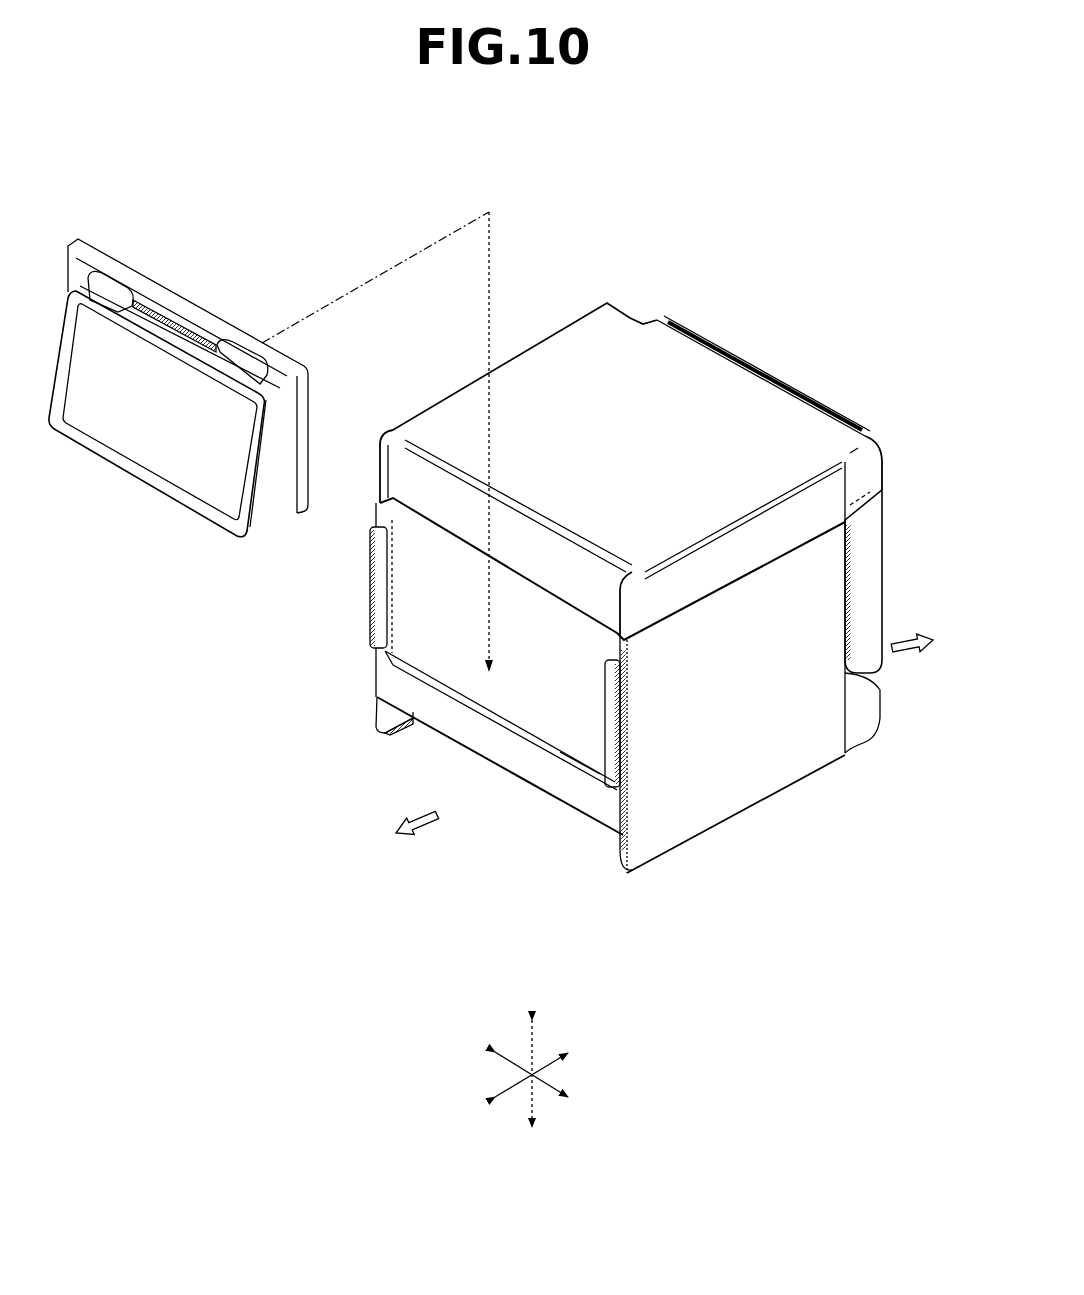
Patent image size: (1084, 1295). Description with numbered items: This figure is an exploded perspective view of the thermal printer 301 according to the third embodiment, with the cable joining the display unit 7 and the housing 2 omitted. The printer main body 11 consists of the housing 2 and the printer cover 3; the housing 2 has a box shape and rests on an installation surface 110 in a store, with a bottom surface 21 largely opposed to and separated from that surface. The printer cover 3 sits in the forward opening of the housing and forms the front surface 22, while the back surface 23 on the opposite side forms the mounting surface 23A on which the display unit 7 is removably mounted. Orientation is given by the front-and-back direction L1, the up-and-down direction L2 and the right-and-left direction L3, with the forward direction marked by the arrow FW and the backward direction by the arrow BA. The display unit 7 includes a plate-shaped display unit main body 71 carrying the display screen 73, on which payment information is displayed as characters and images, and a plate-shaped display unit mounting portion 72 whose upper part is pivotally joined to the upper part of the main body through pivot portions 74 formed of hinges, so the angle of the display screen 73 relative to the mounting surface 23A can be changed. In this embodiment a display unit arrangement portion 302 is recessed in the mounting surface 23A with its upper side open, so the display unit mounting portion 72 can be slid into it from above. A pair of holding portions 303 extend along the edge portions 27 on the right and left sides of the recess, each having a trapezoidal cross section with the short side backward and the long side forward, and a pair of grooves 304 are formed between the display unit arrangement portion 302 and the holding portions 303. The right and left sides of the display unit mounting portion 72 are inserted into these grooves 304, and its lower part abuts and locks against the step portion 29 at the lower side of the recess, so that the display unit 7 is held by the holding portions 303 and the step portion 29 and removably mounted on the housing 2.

The housing 2 is at (620, 689).
The printer cover 3 is at (876, 548).
The display unit 7 is at (178, 404).
The printer main body 11 is at (789, 382).
The bottom surface 21 is at (800, 785).
The front surface 22 is at (880, 467).
The back surface 23 is at (456, 669).
The mounting surface 23A is at (387, 680).
The edge portions 27 is at (365, 517).
The step portion 29 is at (583, 767).
The display unit main body 71 is at (157, 446).
The display unit mounting portion 72 is at (285, 490).
The display screen 73 is at (148, 433).
The pivot portions 74 is at (102, 288).
The installation surface 110 is at (331, 928).
The thermal printer 301 is at (662, 420).
The display unit arrangement portion 302 is at (433, 580).
The holding portions 303 is at (380, 622).
The grooves 304 is at (395, 547).
The forward direction FW is at (897, 633).
The backward direction BA is at (437, 830).
The front-and-back direction L1 is at (548, 1068).
The up-and-down direction L2 is at (524, 1092).
The right-and-left direction L3 is at (545, 1085).